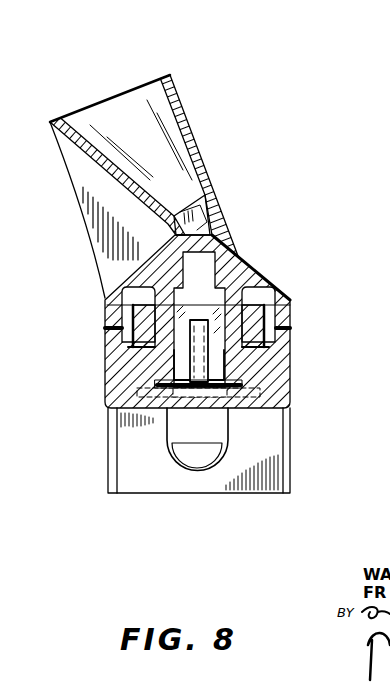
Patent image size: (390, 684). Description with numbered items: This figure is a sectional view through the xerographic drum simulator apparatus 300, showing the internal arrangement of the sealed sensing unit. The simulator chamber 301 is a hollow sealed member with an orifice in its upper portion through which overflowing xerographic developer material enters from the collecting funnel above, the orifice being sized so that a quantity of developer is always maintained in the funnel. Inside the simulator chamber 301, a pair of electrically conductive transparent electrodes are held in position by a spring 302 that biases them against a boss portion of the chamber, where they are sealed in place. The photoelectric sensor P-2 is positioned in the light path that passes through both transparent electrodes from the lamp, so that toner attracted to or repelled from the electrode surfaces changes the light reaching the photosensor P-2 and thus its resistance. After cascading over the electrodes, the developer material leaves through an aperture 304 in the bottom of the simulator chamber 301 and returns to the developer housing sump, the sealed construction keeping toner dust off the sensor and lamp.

The simulator apparatus 300 is at (250, 244).
The simulator chamber 301 is at (292, 378).
The spring 302 is at (140, 303).
The aperture 304 is at (200, 406).
The photoelectric sensor P-2 is at (190, 373).